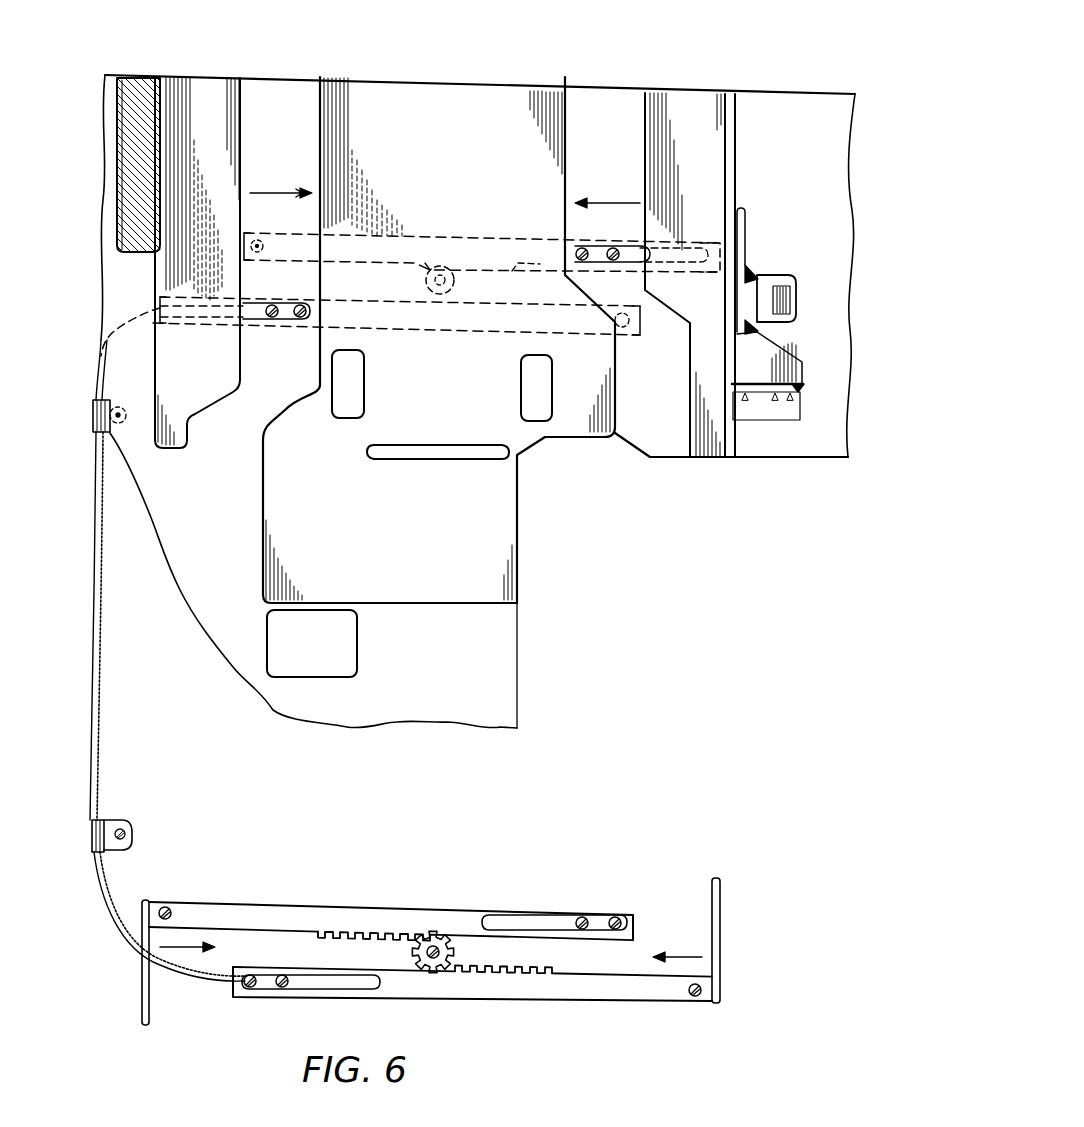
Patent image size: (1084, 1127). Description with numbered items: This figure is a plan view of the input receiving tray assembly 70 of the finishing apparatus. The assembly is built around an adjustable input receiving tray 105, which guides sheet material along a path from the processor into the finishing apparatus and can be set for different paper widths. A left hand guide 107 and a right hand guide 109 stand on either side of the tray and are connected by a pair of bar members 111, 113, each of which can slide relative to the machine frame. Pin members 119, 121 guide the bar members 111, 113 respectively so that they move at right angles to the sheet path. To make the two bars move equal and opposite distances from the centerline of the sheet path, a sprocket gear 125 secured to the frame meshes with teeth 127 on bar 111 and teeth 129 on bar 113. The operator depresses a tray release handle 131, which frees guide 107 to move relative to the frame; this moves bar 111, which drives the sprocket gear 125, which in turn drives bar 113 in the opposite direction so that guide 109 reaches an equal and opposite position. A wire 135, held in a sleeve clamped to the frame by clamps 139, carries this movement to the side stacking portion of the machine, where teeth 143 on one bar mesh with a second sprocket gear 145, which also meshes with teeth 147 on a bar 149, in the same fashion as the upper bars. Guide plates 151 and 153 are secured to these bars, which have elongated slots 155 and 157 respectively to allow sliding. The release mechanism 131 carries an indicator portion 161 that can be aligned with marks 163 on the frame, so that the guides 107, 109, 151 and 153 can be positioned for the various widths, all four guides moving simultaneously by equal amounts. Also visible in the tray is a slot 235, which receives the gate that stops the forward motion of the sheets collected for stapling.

The input receiving tray assembly 70 is at (480, 80).
The adjustable input receiving tray 105 is at (443, 103).
The left hand guide 107 is at (688, 113).
The right hand guide 109 is at (207, 105).
The bar member 111 is at (525, 249).
The bar member 113 is at (335, 311).
The pin member 119 is at (614, 249).
The pin member 121 is at (281, 318).
The sprocket gear 125 is at (456, 283).
The teeth 127 is at (520, 282).
The teeth 129 is at (364, 283).
The tray release handle 131 is at (793, 283).
The wire 135 is at (138, 943).
The clamps 139 is at (92, 420).
The teeth 143 is at (533, 973).
The sprocket gear 145 is at (438, 942).
The teeth 147 is at (367, 938).
The bar 149 is at (342, 918).
The guide plate 151 is at (721, 898).
The guide plate 153 is at (149, 1007).
The elongated slot 155 is at (323, 984).
The elongated slot 157 is at (533, 920).
The indicator portion 161 is at (802, 382).
The marks 163 is at (798, 393).
The slot 235 is at (457, 460).